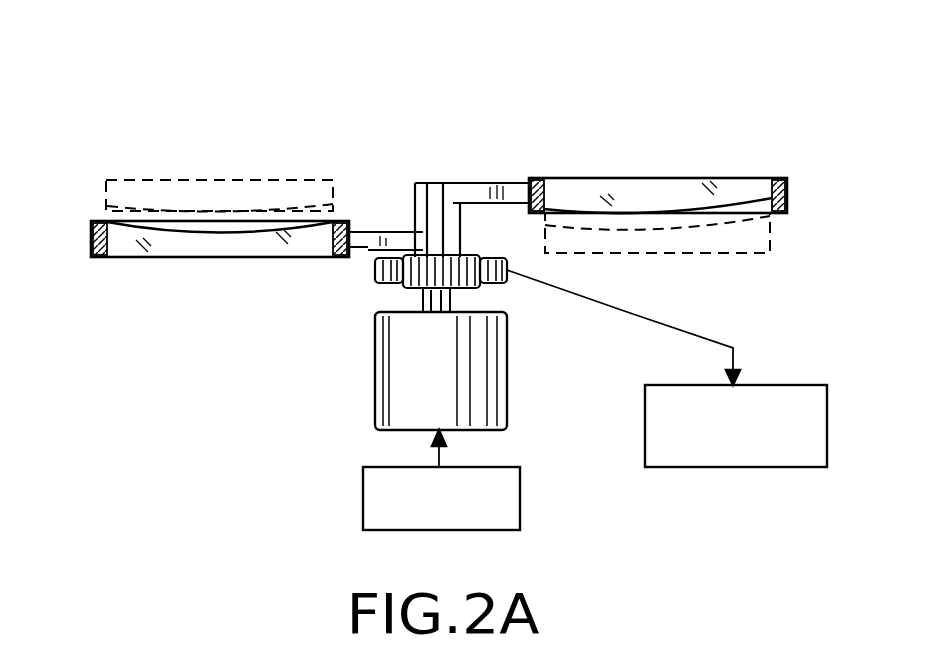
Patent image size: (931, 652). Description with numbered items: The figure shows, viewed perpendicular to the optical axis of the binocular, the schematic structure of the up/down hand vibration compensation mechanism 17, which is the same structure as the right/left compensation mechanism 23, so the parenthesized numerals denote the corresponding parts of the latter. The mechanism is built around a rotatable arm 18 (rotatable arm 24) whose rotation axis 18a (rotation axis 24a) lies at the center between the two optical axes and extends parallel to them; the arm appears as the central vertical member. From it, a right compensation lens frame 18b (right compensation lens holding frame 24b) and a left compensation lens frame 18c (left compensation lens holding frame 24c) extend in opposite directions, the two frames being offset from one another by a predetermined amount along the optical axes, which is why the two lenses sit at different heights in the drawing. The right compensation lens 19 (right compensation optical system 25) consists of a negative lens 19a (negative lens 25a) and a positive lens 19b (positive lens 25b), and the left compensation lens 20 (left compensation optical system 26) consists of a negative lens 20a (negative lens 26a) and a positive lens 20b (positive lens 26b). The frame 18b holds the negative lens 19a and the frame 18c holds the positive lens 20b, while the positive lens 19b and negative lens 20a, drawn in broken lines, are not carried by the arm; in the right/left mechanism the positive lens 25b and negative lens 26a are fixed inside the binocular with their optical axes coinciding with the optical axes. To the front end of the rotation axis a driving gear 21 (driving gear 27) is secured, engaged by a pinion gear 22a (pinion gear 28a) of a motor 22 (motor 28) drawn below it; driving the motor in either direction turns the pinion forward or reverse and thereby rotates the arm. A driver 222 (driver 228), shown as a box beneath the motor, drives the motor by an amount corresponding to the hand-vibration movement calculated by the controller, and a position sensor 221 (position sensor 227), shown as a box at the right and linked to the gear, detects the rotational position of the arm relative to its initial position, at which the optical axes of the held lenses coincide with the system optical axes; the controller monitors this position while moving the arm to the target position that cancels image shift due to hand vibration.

The up/down hand vibration compensation mechanism 17 is at (258, 370).
The right/left compensation mechanism 23 is at (430, 236).
The rotatable arm 18 is at (552, 88).
The rotatable arm 24 is at (426, 143).
The rotation axis 18a is at (447, 230).
The right compensation lens frame 18b is at (380, 232).
The left compensation lens frame 18c is at (497, 183).
The rotation axis 24a is at (425, 187).
The right compensation lens holding frame 24b is at (363, 183).
The left compensation lens holding frame 24c is at (482, 160).
The right compensation lens 19 is at (73, 88).
The right compensation optical system 25 is at (223, 143).
The negative lens 19a is at (167, 240).
The positive lens 19b is at (227, 198).
The negative lens 25a is at (223, 187).
The positive lens 25b is at (219, 164).
The left compensation lens 20 is at (613, 88).
The left compensation optical system 26 is at (658, 141).
The negative lens 20a is at (643, 217).
The positive lens 20b is at (730, 193).
The negative lens 26a is at (657, 185).
The positive lens 26b is at (658, 165).
The driving gear 21 is at (375, 268).
The driving gear 27 is at (372, 295).
The motor 22 is at (487, 390).
The motor 28 is at (486, 388).
The pinion gear 22a is at (415, 292).
The pinion gear 28a is at (368, 343).
The driver 222 is at (363, 505).
The driver 228 is at (388, 480).
The position sensor 221 is at (707, 467).
The position sensor 227 is at (667, 412).